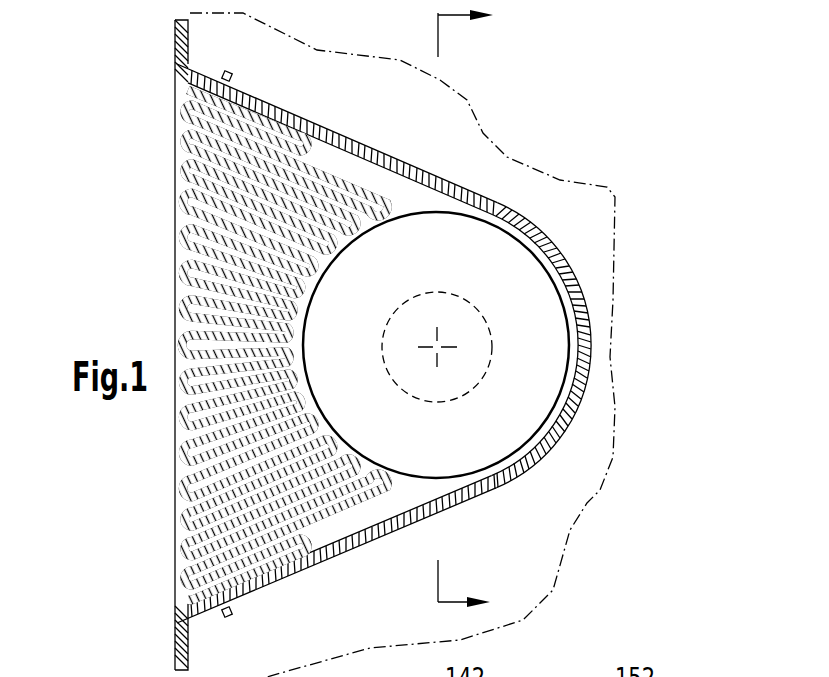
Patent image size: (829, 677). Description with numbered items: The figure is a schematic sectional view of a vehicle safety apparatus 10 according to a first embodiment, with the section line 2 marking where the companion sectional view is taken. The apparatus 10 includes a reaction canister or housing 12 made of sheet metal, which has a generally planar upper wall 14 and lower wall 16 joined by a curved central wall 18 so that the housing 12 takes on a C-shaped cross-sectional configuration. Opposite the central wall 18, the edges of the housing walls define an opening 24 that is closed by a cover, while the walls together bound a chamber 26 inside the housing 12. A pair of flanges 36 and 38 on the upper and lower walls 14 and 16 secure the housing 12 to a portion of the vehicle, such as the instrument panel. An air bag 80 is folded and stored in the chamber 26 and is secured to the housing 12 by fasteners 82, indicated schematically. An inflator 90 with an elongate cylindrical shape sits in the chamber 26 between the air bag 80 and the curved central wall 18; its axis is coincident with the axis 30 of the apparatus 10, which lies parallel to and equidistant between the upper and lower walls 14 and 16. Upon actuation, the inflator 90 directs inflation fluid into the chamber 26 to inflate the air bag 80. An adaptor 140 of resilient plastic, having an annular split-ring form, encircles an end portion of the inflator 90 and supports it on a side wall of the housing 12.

The vehicle safety apparatus 10 is at (672, 261).
The housing 12 is at (426, 348).
The upper wall 14 is at (332, 129).
The lower wall 16 is at (348, 556).
The curved central wall 18 is at (586, 386).
The opening 24 is at (135, 348).
The flange 36 is at (175, 46).
The flange 38 is at (175, 650).
The chamber 26 is at (371, 524).
The air bag 80 is at (363, 152).
The inflator 90 is at (438, 508).
The fasteners 82 is at (226, 71).
The axis 30 is at (438, 350).
The adaptor 140 is at (436, 290).
The section line 2- 2 is at (475, 312).